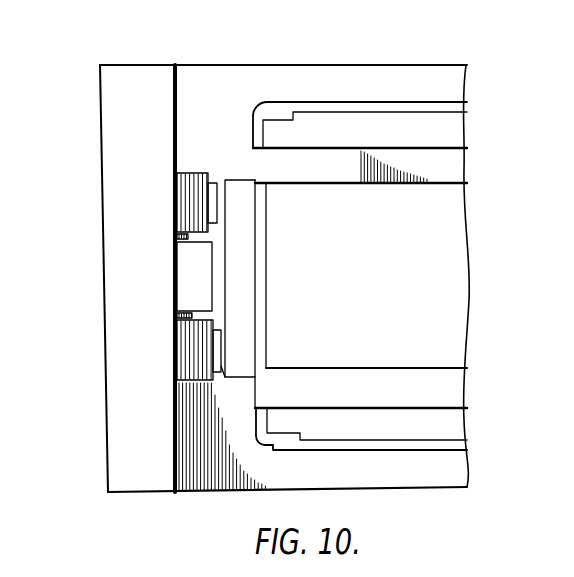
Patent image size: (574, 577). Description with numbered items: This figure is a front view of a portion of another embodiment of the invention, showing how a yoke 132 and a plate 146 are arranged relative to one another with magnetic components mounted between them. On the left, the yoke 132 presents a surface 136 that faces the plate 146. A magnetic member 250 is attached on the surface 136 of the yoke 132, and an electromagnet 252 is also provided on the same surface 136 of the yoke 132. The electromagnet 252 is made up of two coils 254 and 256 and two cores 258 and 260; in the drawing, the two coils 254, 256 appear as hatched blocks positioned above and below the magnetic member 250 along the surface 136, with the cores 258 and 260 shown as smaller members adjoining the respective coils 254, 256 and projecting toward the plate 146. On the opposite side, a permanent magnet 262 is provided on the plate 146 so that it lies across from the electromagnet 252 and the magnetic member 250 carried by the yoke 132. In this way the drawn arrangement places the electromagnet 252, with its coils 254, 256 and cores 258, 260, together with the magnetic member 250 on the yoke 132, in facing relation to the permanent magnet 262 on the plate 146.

The yoke 132 is at (147, 428).
The surface 136 is at (178, 462).
The plate 146 is at (267, 290).
The magnetic member 250 is at (185, 275).
The electromagnet 252 is at (142, 198).
The coil 254 is at (183, 205).
The coil 256 is at (187, 360).
The core 258 is at (213, 187).
The core 260 is at (220, 360).
The permanent magnet 262 is at (245, 190).